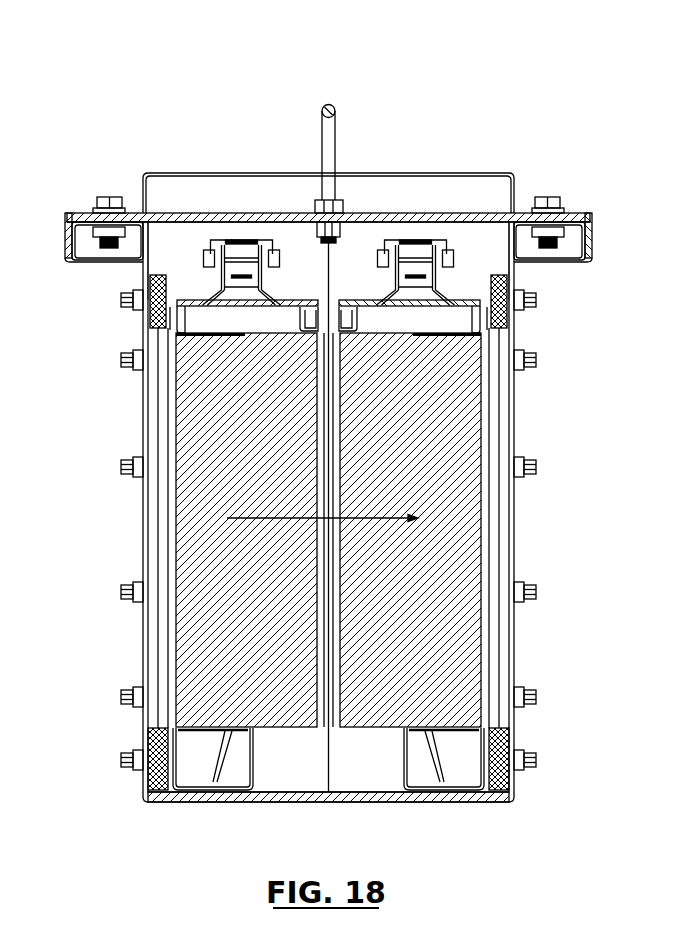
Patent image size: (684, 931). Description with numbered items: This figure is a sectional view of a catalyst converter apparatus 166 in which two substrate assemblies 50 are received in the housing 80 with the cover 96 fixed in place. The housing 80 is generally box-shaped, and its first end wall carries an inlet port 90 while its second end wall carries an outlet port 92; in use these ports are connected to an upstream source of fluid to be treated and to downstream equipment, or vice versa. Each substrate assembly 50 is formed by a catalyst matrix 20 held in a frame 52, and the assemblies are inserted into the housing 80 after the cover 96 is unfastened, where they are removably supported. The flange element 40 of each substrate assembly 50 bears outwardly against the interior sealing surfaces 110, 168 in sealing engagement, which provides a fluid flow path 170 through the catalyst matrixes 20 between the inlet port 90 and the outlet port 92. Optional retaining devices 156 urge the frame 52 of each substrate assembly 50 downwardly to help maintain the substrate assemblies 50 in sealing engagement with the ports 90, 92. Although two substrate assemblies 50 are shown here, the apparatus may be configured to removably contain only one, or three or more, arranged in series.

The catalyst converter apparatus 166 is at (482, 148).
The housing 80 is at (513, 155).
The substrate assembly 50 is at (185, 270).
The retaining device 156 is at (238, 237).
The cover 96 is at (596, 237).
The frame 52 is at (197, 302).
The flange element 40 is at (168, 320).
The catalyst matrix 20 is at (205, 412).
The fluid flow path 170 is at (372, 518).
The inlet port 90 is at (167, 563).
The outlet port 92 is at (492, 553).
The interior sealing surface 110 is at (172, 738).
The interior sealing surface 168 is at (488, 740).